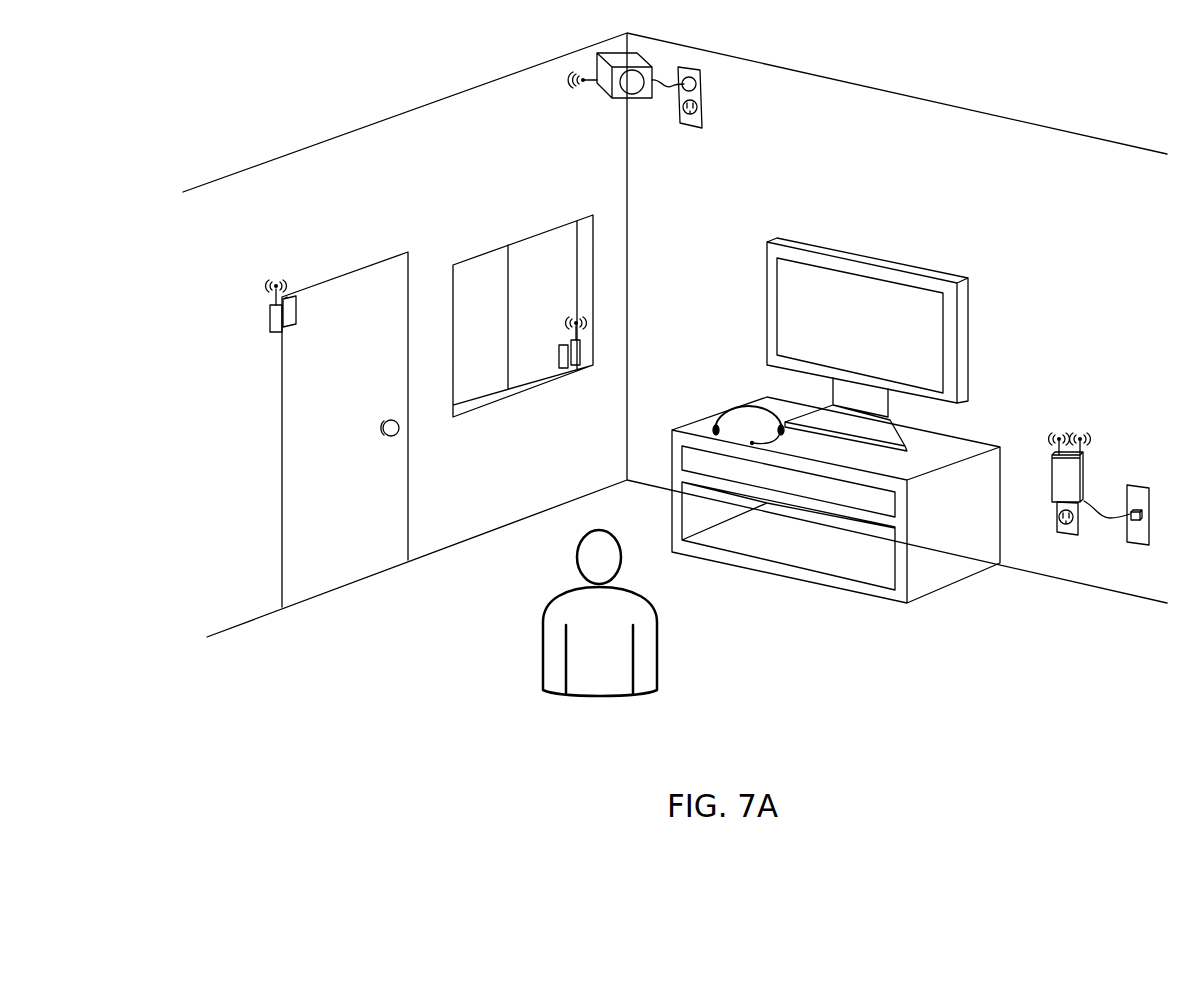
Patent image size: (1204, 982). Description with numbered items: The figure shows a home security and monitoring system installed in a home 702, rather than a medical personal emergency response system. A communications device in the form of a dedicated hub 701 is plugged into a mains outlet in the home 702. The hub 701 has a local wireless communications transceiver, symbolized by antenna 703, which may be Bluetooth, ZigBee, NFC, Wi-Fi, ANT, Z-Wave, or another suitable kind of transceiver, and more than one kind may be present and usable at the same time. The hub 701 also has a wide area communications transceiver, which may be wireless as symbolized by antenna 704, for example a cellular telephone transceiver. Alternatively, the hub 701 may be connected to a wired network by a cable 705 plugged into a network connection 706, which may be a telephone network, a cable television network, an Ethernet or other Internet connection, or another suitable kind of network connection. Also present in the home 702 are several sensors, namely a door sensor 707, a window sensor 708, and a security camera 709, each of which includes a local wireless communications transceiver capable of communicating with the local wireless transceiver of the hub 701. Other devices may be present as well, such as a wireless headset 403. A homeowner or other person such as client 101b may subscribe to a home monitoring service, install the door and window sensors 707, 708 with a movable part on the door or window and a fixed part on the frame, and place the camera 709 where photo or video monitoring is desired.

The home 702 is at (349, 97).
The security camera 709 is at (618, 104).
The door sensor 707 is at (261, 340).
The window sensor 708 is at (619, 331).
The wireless headset 403 is at (752, 410).
The client 101b is at (578, 690).
The dedicated hub 701 is at (1111, 481).
The antenna 703 is at (1042, 403).
The antenna 704 is at (1095, 407).
The cable 705 is at (1099, 542).
The network connection 706 is at (1118, 555).